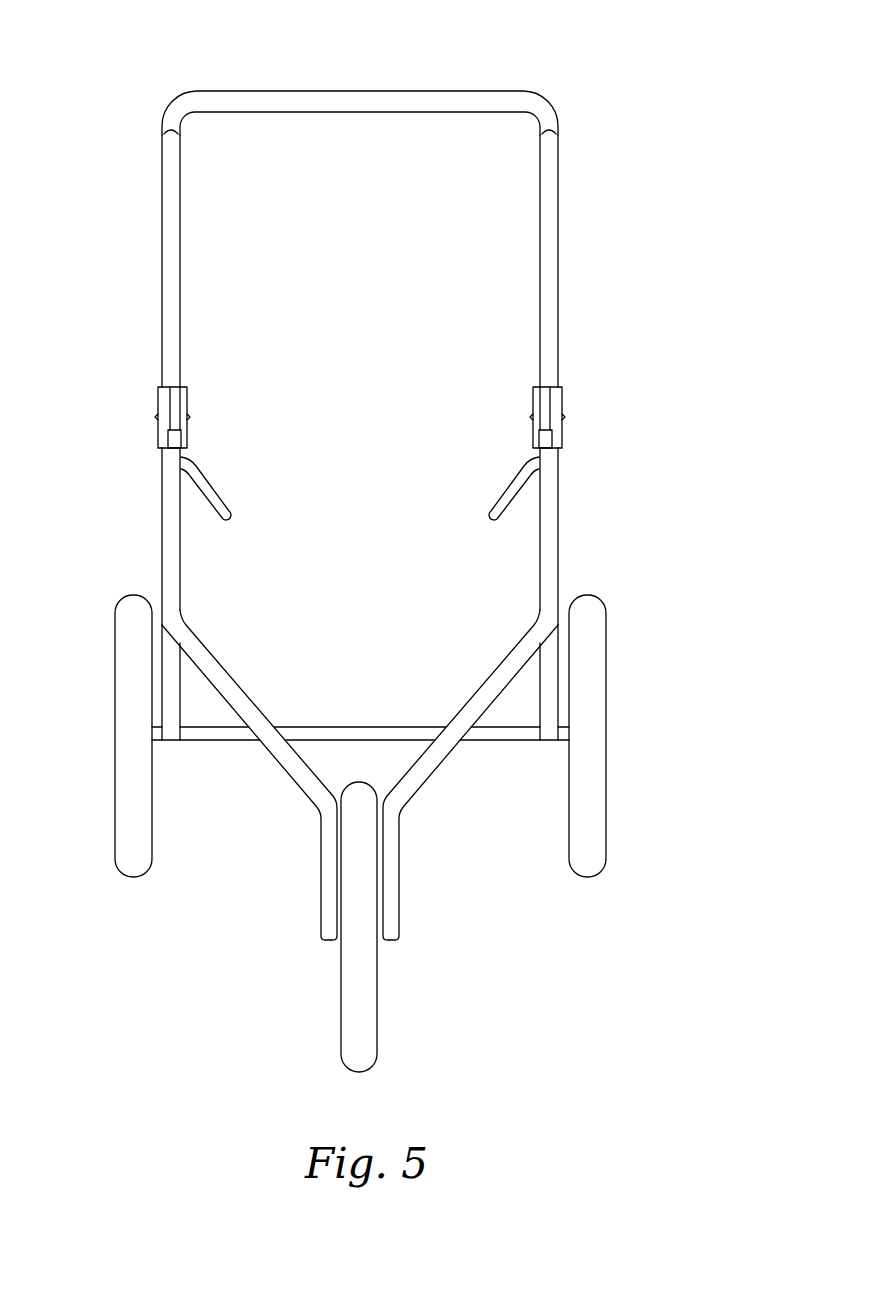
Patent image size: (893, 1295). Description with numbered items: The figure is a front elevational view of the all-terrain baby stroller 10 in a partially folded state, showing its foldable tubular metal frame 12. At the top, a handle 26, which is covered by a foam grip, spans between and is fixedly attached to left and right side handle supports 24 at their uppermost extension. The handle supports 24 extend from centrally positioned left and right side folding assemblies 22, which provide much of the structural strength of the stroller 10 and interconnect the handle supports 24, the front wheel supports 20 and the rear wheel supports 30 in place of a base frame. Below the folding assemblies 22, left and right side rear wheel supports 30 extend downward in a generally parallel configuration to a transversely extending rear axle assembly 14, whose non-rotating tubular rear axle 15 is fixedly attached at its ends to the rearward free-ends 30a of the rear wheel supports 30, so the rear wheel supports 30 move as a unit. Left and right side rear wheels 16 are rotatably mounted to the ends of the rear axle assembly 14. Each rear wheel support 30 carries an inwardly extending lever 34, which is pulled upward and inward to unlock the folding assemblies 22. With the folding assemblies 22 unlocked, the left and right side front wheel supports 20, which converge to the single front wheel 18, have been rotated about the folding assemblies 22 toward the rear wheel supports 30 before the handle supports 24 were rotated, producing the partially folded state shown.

The all-terrain baby stroller 10 is at (650, 58).
The frame 12 is at (162, 272).
The rear axle assembly 14 is at (240, 742).
The tubular rear axle 15 is at (197, 742).
The rear wheels 16 is at (115, 620).
The front wheel 18 is at (378, 1047).
The front wheel supports 20 is at (240, 688).
The folding assemblies 22 is at (158, 400).
The handle supports 24 is at (162, 183).
The handle 26 is at (358, 98).
The rear wheel supports 30 is at (181, 577).
The rearward free-end 30a is at (178, 678).
The lever 34 is at (186, 462).